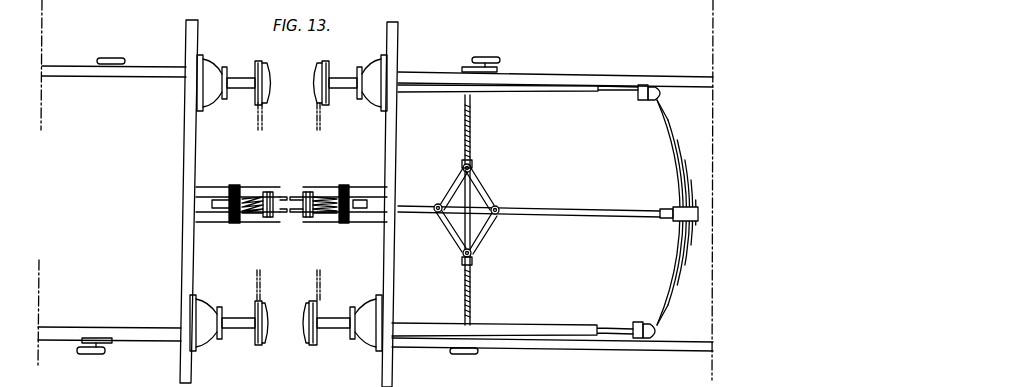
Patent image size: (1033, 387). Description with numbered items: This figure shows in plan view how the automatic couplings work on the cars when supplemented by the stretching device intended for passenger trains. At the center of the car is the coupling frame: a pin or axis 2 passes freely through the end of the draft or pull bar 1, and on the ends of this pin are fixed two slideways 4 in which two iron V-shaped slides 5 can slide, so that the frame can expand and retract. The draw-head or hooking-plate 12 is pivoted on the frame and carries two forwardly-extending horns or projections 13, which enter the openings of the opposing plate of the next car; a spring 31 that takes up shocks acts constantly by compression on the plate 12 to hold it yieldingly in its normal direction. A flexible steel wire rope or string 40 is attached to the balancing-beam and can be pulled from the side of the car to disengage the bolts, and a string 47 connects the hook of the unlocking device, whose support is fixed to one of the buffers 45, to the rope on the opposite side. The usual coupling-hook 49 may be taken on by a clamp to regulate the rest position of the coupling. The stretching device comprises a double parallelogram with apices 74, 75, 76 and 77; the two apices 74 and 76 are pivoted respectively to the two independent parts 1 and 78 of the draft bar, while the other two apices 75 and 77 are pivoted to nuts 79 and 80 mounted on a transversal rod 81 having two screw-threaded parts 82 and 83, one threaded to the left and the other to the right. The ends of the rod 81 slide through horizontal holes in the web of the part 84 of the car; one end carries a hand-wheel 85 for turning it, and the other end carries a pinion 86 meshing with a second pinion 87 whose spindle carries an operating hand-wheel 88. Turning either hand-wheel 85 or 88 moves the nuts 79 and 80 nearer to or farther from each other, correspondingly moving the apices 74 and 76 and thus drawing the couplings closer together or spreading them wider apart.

The draft or pull bar 1 is at (407, 206).
The pin or axis 2 is at (371, 213).
The slideways 4 is at (228, 187).
The V-shaped slides 5 is at (328, 189).
The draw-head or hooking-plate 12 is at (262, 214).
The horns or projections 13 is at (296, 195).
The spring 31 is at (328, 214).
The flexible steel wire rope or string 40 is at (321, 121).
The buffer 45 is at (234, 92).
The string 47 is at (316, 121).
The coupling-hook 49 is at (359, 203).
The apex of the parallelogram 74 is at (442, 228).
The apex of the parallelogram 75 is at (455, 184).
The apex of the parallelogram 76 is at (490, 199).
The apex of the parallelogram 77 is at (467, 240).
The part of the draft or pull bar 78 is at (612, 216).
The nut 79 is at (476, 163).
The nut 80 is at (474, 261).
The transversal rod 81 is at (470, 205).
The screw-threaded part 82 is at (465, 132).
The screw-threaded part 83 is at (463, 296).
The part of the car 84 is at (78, 62).
The hand-wheel 85 is at (458, 362).
The pinion 86 is at (462, 71).
The second pinion 87 is at (490, 70).
The operating hand-wheel 88 is at (492, 55).